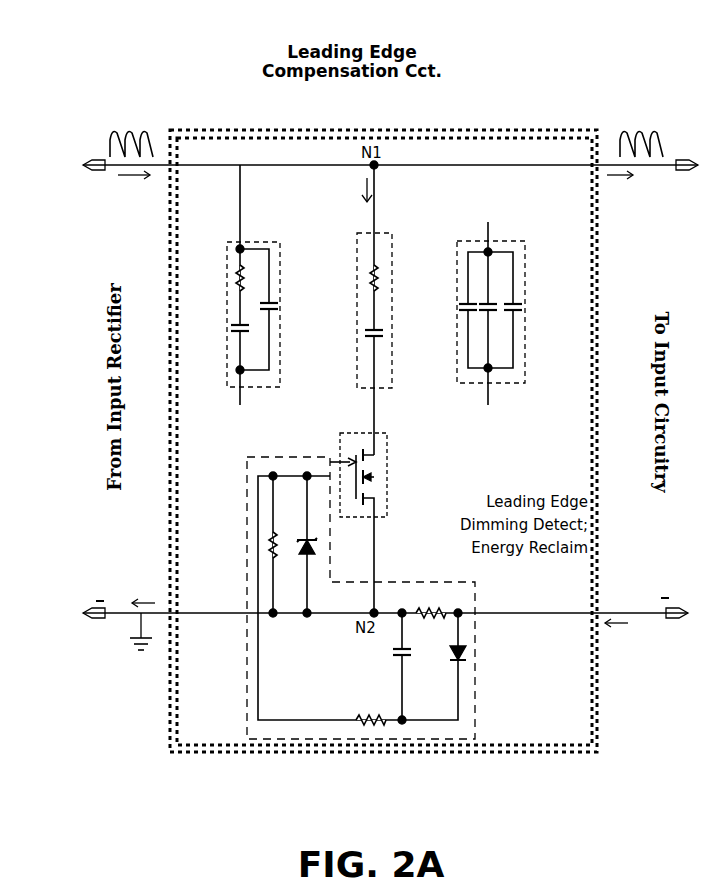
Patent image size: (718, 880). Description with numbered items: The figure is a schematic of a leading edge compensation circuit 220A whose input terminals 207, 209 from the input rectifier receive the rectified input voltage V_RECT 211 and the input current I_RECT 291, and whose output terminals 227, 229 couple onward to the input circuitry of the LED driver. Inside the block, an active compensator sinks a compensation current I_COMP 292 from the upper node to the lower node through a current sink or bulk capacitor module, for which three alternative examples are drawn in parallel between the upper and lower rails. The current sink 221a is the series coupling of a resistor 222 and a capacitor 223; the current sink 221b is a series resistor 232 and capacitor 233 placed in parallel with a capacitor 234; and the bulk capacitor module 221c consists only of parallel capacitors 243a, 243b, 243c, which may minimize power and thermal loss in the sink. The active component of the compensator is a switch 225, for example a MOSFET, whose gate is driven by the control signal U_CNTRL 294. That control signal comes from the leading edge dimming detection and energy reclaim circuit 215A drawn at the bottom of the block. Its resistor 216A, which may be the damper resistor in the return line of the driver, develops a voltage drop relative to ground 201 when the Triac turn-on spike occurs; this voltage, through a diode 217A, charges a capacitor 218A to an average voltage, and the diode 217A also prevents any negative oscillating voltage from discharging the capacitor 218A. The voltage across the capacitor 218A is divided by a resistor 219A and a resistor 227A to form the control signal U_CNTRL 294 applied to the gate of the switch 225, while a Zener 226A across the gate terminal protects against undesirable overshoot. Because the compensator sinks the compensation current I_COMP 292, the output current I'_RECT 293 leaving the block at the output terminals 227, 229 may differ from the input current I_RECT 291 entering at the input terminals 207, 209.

The ground 201 is at (141, 648).
The input terminal 207 is at (97, 198).
The input terminal 209 is at (98, 592).
The rectified input voltage V_RECT 211 is at (127, 136).
The leading edge dimming detection circuit 215A is at (403, 570).
The resistor 216A is at (443, 601).
The diode 217A is at (468, 657).
The capacitor 218A is at (413, 660).
The resistor 219A is at (365, 711).
The leading edge compensation circuit 220A is at (312, 128).
The current sink 221a is at (394, 234).
The current sink 221b is at (248, 236).
The bulk capacitor module 221c is at (545, 240).
The resistor 222 is at (364, 280).
The capacitor 223 is at (364, 328).
The switch 225 is at (380, 466).
The Zener 226A is at (318, 560).
The output terminal 227 is at (690, 198).
The resistor 227A is at (283, 548).
The output terminal 229 is at (665, 590).
The resistor 232 is at (232, 280).
The capacitor 233 is at (236, 346).
The capacitor 234 is at (276, 316).
The capacitor 243a is at (493, 318).
The capacitor 243b is at (468, 315).
The capacitor 243c is at (520, 316).
The input current I_RECT 291 is at (140, 200).
The compensation current I_COMP 292 is at (345, 192).
The output current I'_RECT 293 is at (652, 195).
The control signal U_CNTRL 294 is at (331, 460).